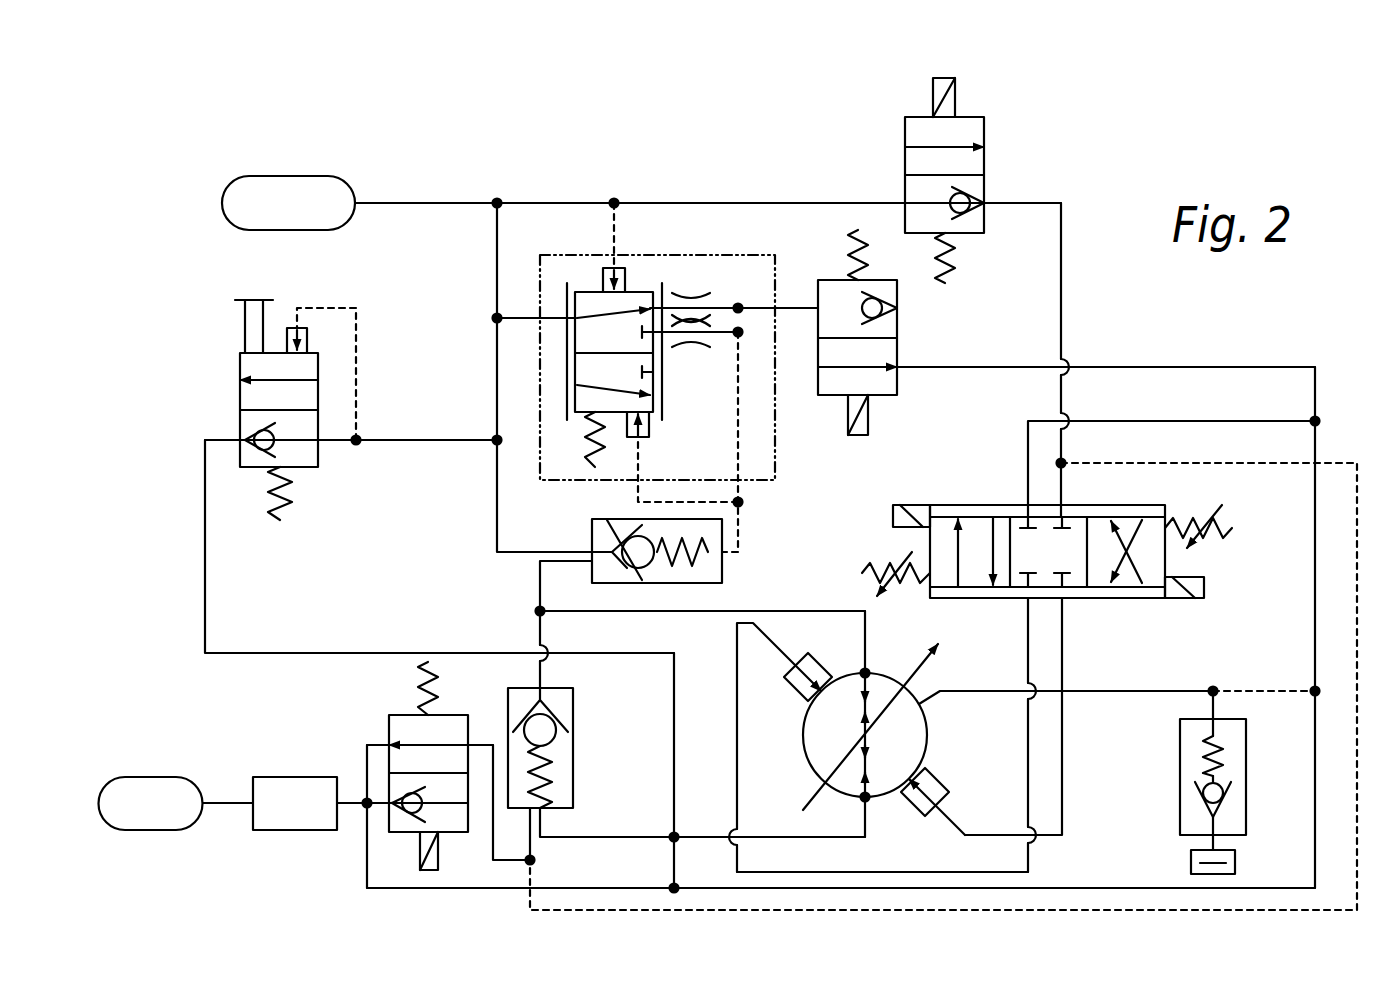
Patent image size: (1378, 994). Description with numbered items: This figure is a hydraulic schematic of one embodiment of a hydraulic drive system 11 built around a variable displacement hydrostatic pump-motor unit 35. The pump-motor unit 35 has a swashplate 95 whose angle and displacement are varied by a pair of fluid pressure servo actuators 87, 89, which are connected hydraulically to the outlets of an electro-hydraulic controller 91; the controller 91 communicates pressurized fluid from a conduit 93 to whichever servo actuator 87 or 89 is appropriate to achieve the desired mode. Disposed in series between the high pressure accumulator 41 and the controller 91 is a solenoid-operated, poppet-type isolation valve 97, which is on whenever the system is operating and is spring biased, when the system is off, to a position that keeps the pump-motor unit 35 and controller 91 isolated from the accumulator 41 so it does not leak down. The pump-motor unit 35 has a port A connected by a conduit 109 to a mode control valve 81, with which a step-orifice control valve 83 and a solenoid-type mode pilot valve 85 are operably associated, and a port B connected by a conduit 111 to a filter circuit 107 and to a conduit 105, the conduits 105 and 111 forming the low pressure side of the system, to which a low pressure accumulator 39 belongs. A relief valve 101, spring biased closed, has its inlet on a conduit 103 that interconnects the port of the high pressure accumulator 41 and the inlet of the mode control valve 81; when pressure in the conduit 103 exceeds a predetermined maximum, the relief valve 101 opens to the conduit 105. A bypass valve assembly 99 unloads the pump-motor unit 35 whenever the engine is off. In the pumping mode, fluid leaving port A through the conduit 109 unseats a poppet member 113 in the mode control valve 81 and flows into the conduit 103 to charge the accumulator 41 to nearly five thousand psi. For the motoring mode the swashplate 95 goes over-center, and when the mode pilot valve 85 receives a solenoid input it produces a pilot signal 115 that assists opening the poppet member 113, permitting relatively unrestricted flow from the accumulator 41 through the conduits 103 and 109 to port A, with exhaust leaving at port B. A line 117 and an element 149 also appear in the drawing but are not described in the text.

The hydraulic drive system 11 is at (168, 184).
The high pressure accumulator 41 is at (282, 176).
The conduit 93 is at (553, 203).
The isolation valve 97 is at (905, 162).
The step-orifice control valve 83 is at (692, 246).
The mode pilot valve 85 is at (907, 343).
The relief valve 101 is at (220, 396).
The conduit 103 is at (498, 380).
The pilot signal 115 is at (740, 410).
The electro-hydraulic controller 91 is at (968, 503).
The poppet member 113 is at (592, 521).
The pump-motor unit 35 is at (842, 636).
The conduit 109 is at (732, 611).
The conduit 105 is at (206, 530).
The mode control valve 81 is at (657, 597).
The port A is at (866, 671).
The port B is at (867, 800).
The swashplate 95 is at (936, 678).
The servo actuator 89 is at (800, 698).
The servo actuator 87 is at (928, 768).
The conduit 111 is at (957, 872).
The bypass valve assembly 99 is at (584, 773).
The low pressure accumulator 39 is at (145, 777).
The filter circuit 107 is at (293, 762).
The low pressure line 117 is at (225, 803).
The relief valve with tank 149 is at (1178, 866).